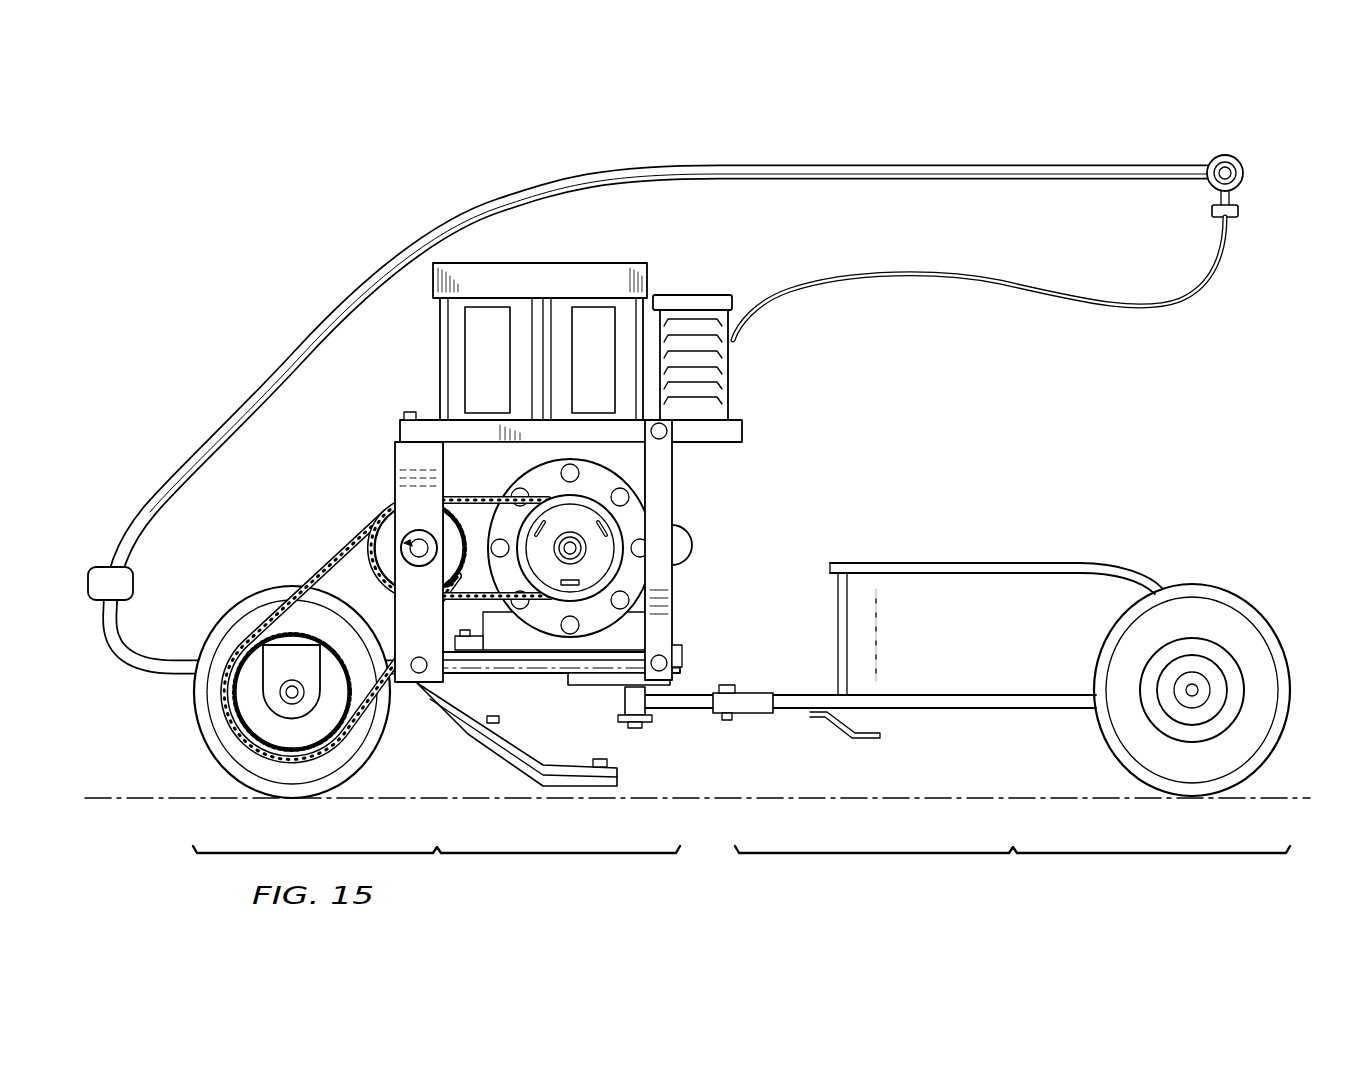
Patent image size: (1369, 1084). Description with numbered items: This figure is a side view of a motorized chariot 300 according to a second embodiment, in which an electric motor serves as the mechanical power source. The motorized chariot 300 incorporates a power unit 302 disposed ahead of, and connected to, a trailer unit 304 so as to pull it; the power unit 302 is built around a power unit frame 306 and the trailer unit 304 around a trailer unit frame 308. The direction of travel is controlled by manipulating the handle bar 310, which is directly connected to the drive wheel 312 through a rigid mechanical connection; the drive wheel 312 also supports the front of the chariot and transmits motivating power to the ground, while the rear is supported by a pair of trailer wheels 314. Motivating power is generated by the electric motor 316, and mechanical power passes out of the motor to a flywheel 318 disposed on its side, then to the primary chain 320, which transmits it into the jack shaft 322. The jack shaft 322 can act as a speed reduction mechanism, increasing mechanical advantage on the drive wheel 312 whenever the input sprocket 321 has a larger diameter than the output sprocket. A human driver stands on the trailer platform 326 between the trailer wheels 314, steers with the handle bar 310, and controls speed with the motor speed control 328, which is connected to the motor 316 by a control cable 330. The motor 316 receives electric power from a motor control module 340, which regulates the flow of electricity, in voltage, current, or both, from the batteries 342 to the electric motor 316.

The motorized chariot 300 is at (296, 274).
The power unit 302 is at (436, 866).
The trailer unit 304 is at (1012, 866).
The power unit frame 306 is at (536, 675).
The trailer unit frame 308 is at (942, 710).
The handle bar 310 is at (872, 164).
The drive wheel 312 is at (197, 708).
The trailer wheels 314 is at (1290, 690).
The electric motor 316 is at (640, 520).
The flywheel 318 is at (598, 568).
The primary chain 320 is at (460, 498).
The input sprocket 321 is at (382, 540).
The jack shaft 322 is at (421, 568).
The trailer platform 326 is at (950, 565).
The motor speed control 328 is at (1245, 170).
The control cable 330 is at (1115, 308).
The motor control module 340 is at (695, 296).
The batteries 342 is at (567, 262).